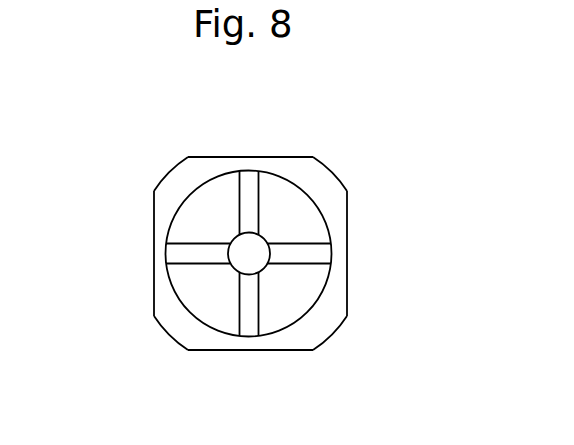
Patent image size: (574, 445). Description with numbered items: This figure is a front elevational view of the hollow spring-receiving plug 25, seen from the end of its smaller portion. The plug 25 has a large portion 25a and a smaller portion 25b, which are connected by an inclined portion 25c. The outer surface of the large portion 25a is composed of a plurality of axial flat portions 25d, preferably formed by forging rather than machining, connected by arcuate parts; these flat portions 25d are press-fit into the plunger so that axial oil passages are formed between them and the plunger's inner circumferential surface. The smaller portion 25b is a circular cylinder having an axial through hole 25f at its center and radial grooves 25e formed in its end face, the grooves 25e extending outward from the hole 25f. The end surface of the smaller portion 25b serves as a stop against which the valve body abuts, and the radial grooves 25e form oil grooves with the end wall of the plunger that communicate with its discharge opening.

The spring-receiving plug 25 is at (333, 128).
The large portion 25a is at (335, 173).
The smaller portion 25b is at (328, 218).
The inclined portion 25c is at (322, 320).
The axial flat portions 25d is at (200, 156).
The radial grooves 25e is at (250, 183).
The axial through hole 25f is at (244, 261).